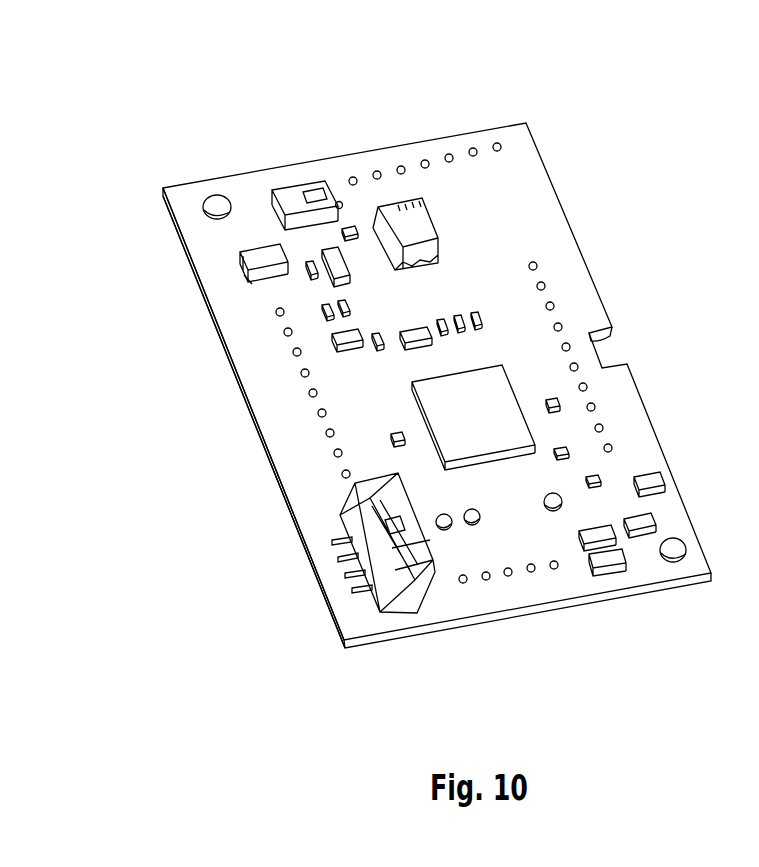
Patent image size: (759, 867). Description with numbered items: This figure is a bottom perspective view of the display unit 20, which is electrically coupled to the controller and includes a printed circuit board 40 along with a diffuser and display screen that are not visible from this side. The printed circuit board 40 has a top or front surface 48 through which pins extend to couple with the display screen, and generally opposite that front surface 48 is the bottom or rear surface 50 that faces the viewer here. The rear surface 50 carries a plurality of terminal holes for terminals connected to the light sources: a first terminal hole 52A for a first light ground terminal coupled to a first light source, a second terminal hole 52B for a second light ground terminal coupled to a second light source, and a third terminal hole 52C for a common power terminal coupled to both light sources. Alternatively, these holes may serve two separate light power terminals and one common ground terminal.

The display unit 20 is at (405, 370).
The printed circuit board 40 is at (575, 292).
The front surface 48 is at (200, 303).
The rear surface 50 is at (287, 422).
The first terminal hole 52A is at (553, 511).
The second terminal hole 52B is at (472, 526).
The third terminal hole 52C is at (444, 531).